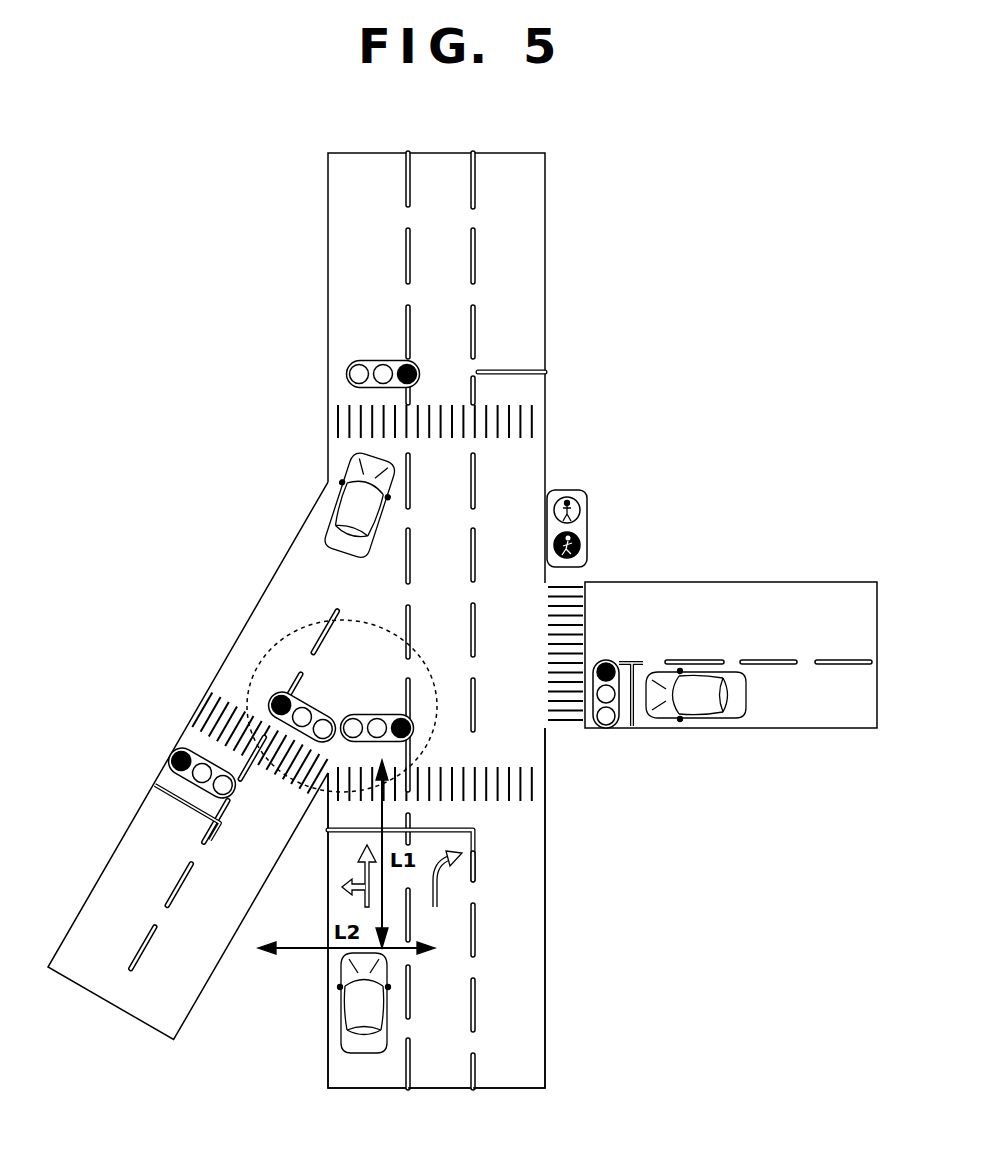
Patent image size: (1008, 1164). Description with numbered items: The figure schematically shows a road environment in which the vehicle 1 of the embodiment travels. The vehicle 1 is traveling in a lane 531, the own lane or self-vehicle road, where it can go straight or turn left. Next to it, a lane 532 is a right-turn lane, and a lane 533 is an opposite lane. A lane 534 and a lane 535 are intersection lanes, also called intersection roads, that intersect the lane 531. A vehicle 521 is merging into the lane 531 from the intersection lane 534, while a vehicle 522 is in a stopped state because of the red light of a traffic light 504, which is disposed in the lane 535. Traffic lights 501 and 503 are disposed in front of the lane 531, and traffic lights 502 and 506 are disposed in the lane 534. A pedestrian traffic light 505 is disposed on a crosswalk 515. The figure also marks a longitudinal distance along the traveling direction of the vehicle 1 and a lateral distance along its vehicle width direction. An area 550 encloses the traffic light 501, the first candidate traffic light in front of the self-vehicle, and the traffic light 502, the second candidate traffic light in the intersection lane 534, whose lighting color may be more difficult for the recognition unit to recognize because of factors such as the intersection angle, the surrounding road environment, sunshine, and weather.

The vehicle 1 is at (338, 1005).
The traffic light 501 is at (350, 717).
The traffic light 502 is at (278, 692).
The traffic light 503 is at (345, 372).
The traffic light 504 is at (607, 730).
The pedestrian traffic light 505 is at (590, 520).
The traffic light 506 is at (170, 758).
The crosswalk 515 is at (575, 583).
The vehicle 521 is at (350, 513).
The vehicle 522 is at (710, 700).
The lane 531 is at (370, 1090).
The lane 532 is at (438, 1090).
The lane 533 is at (510, 1090).
The lane 534 is at (79, 975).
The lane 535 is at (848, 718).
The area 550 is at (247, 692).